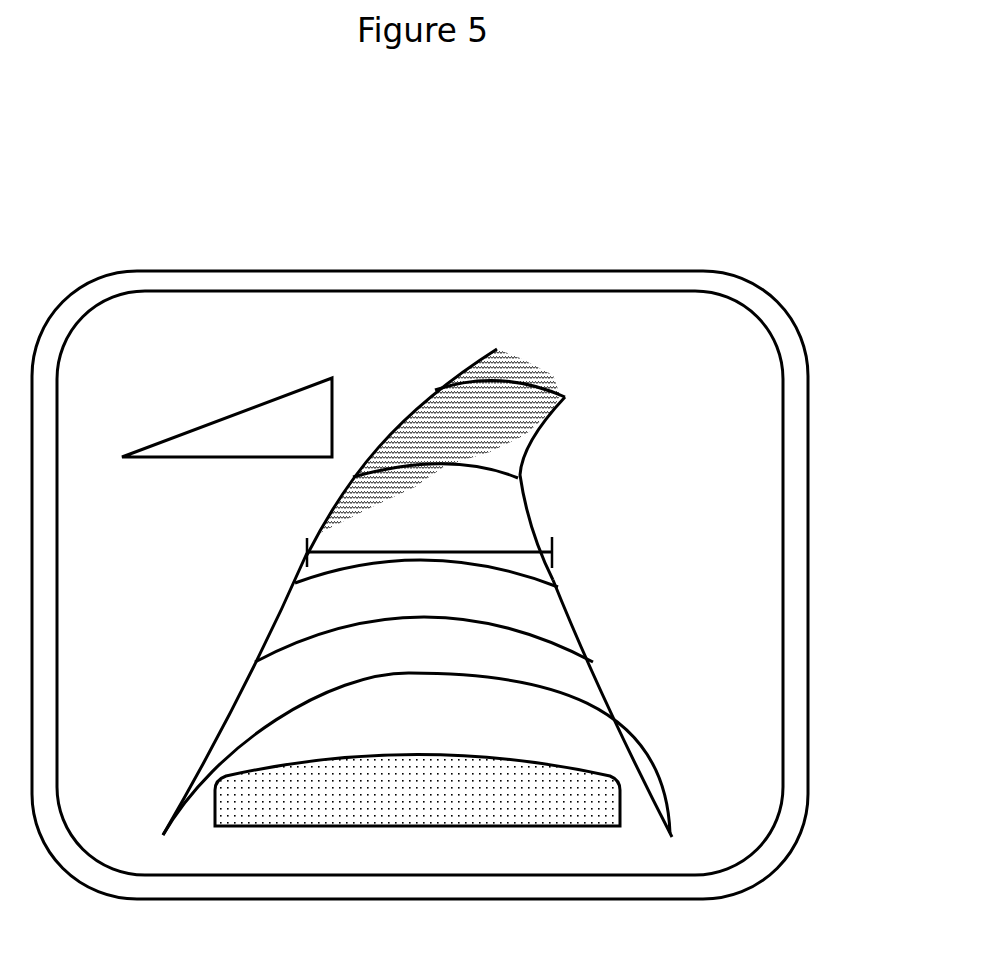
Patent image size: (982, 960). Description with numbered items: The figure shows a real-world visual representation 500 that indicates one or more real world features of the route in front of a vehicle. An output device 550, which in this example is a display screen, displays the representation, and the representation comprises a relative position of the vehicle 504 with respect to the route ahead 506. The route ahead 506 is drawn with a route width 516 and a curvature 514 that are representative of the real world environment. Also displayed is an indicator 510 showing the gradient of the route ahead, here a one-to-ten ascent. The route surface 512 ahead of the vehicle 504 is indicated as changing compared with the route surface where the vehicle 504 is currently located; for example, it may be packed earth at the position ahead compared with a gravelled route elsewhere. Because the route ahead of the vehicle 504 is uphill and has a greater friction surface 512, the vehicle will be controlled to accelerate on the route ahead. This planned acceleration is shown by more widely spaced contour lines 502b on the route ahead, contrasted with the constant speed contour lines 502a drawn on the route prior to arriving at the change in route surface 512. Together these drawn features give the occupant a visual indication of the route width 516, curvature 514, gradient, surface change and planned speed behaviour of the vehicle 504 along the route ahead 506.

The real-world visual representation 500 is at (703, 323).
The output device 550 is at (652, 247).
The constant speed contour lines 502a is at (555, 640).
The contour lines 502b is at (410, 467).
The vehicle 504 is at (532, 803).
The route ahead 506 is at (537, 527).
The indicator 510 is at (236, 414).
The route surface 512 is at (520, 412).
The curvature 514 is at (545, 464).
The route width 516 is at (342, 551).